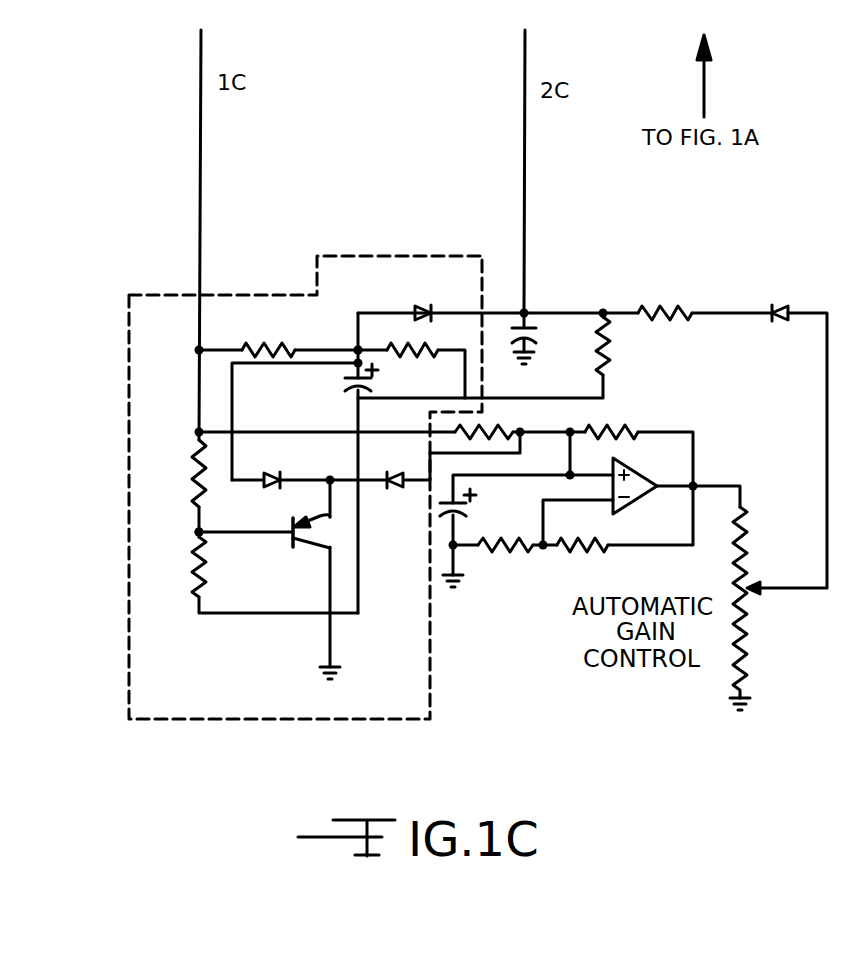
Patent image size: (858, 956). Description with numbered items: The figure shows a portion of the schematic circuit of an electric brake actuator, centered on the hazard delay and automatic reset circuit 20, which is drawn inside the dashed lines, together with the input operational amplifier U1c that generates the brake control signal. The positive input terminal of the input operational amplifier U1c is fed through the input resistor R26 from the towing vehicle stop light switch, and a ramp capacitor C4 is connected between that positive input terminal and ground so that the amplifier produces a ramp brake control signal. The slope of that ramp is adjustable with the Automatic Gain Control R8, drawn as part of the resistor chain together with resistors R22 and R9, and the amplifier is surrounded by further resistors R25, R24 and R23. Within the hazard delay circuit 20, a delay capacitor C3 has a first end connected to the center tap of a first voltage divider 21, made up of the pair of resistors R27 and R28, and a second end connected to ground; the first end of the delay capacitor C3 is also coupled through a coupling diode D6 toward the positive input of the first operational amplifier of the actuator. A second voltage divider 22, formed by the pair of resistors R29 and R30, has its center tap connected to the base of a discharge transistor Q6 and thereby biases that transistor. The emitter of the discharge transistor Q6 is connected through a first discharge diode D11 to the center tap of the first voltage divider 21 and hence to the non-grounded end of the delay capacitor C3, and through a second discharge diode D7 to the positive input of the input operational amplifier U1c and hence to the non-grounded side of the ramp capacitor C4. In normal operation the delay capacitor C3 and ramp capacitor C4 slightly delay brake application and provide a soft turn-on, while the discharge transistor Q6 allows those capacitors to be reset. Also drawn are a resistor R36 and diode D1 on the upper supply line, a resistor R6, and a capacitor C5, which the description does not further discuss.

The hazard delay and automatic reset circuit 20 is at (127, 352).
The first voltage divider 21 is at (357, 348).
The second voltage divider 22 is at (195, 530).
The resistor R27 is at (268, 336).
The resistor R28 is at (412, 364).
The resistor R36 is at (665, 298).
The input resistor R26 is at (494, 421).
The resistor R25 is at (626, 418).
The resistor R24 is at (505, 558).
The resistor R23 is at (582, 558).
The resistor R6 is at (620, 346).
The resistor R29 is at (173, 473).
The resistor R30 is at (171, 567).
The resistor R22 is at (764, 547).
The Automatic Gain Control R8 is at (757, 608).
The resistor R9 is at (757, 663).
The coupling diode D6 is at (422, 297).
The diode D1 is at (777, 295).
The first discharge diode D11 is at (272, 469).
The second discharge diode D7 is at (393, 495).
The capacitor C5 is at (542, 332).
The delay capacitor C3 is at (344, 380).
The ramp capacitor C4 is at (469, 510).
The discharge transistor Q6 is at (304, 548).
The input operational amplifier U1c is at (633, 489).